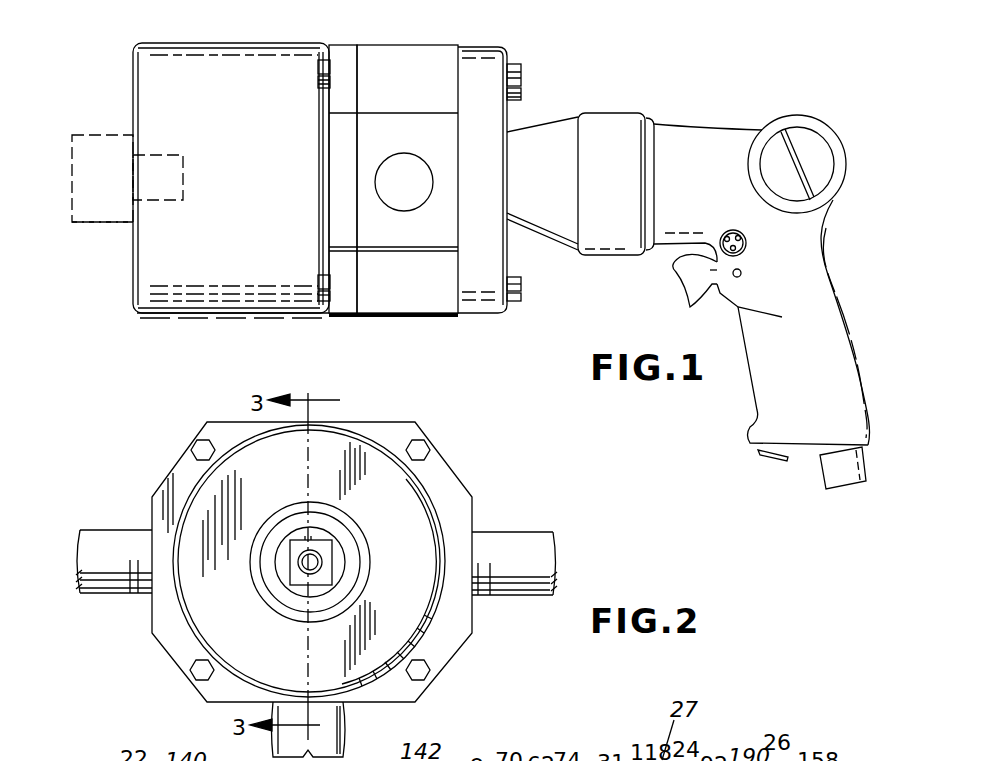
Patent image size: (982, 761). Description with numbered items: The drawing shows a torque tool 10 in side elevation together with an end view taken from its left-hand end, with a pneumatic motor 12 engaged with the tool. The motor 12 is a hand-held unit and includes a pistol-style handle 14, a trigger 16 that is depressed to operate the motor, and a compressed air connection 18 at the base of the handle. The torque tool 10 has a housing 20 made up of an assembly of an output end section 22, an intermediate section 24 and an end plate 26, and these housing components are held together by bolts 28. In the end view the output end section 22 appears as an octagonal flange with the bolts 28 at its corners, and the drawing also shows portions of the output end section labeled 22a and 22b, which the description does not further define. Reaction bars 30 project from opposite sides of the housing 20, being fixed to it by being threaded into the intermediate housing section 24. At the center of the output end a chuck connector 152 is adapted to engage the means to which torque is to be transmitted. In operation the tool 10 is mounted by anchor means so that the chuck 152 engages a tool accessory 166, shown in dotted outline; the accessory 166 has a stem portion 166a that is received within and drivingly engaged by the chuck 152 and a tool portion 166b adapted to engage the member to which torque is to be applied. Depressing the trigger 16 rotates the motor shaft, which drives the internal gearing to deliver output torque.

In FIG. 1, the torque tool 10 is at (290, 318).
In FIG. 1, the pneumatic motor 12 is at (701, 111).
In FIG. 1, the handle 14 is at (832, 305).
In FIG. 2, the handle 14 is at (347, 730).
In FIG. 1, the trigger 16 is at (686, 281).
In FIG. 1, the compressed air connection 18 is at (826, 478).
In FIG. 1, the housing 20 is at (262, 178).
In FIG. 1, the output end section 22 is at (233, 48).
In FIG. 2, the output end section 22 is at (417, 500).
In FIG. 1, the front housing portion 22a is at (138, 60).
In FIG. 1, the housing band 22b is at (345, 50).
In FIG. 1, the intermediate section 24 is at (400, 48).
In FIG. 1, the end plate 26 is at (484, 306).
In FIG. 1, the bolts 28 is at (316, 76).
In FIG. 2, the bolts 28 is at (430, 450).
In FIG. 1, the reaction bars 30 is at (413, 160).
In FIG. 2, the reaction bars 30 is at (108, 540).
In FIG. 2, the chuck connector 152 is at (330, 560).
In FIG. 1, the tool accessory 166 is at (90, 223).
In FIG. 1, the stem portion 166a is at (165, 155).
In FIG. 1, the tool portion 166b is at (70, 152).